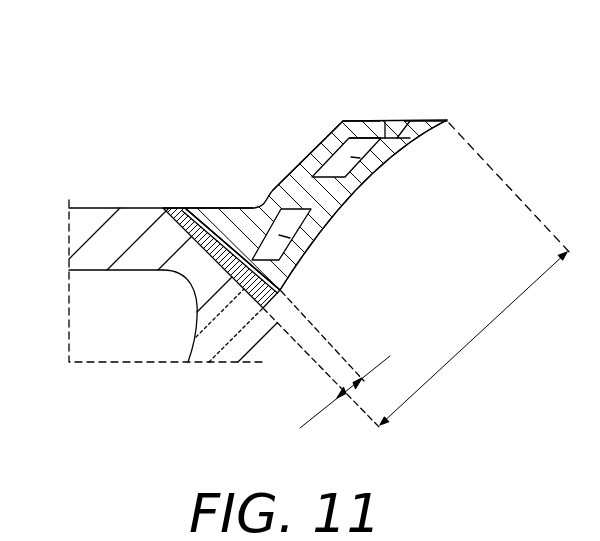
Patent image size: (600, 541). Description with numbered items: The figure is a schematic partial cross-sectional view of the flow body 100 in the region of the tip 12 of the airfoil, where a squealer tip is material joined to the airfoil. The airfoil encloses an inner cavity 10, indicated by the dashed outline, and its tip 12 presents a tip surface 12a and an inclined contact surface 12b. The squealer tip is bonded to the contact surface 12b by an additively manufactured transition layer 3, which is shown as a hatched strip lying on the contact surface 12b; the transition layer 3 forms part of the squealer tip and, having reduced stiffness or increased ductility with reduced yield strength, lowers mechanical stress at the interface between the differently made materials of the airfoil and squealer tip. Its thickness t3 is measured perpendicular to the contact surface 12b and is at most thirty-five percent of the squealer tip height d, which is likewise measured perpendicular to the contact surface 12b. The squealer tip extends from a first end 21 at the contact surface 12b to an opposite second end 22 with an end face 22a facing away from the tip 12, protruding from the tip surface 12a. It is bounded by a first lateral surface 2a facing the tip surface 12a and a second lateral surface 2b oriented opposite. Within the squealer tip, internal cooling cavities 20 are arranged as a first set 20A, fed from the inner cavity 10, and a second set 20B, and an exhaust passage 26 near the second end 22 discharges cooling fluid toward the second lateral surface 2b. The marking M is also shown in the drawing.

The flow body 100 is at (510, 73).
The inner cavity 10 is at (112, 350).
The tip 12 is at (90, 227).
The tip surface 12a is at (161, 208).
The contact surface 12b is at (194, 206).
The transition layer 3 is at (189, 207).
The first end 21 is at (205, 261).
The internal cooling cavity 20 is at (341, 172).
The first set of cavities 20A is at (296, 252).
The second set of cavities 20B is at (360, 160).
The first lateral surface 2a is at (309, 151).
The second lateral surface 2b is at (273, 188).
The second end 22 is at (385, 119).
The end face 22a is at (362, 119).
The exhaust passage 26 is at (412, 120).
The thickness of the transition layer t3 is at (327, 359).
The squealer tip height d is at (476, 274).
The direction M is at (482, 540).